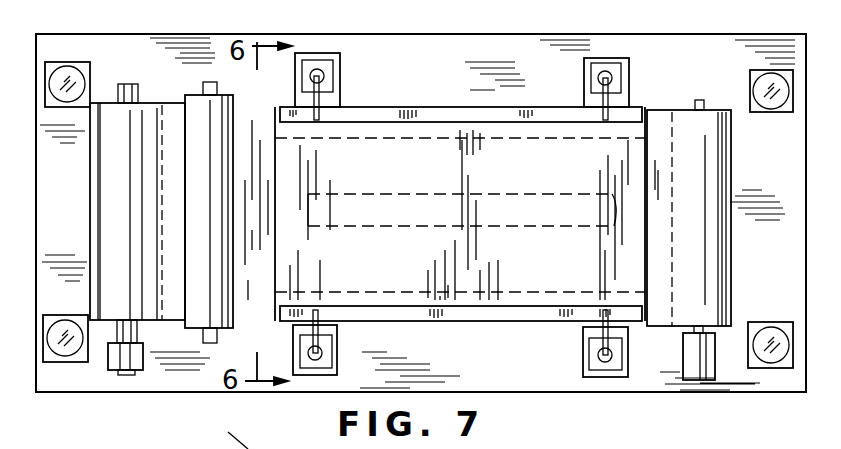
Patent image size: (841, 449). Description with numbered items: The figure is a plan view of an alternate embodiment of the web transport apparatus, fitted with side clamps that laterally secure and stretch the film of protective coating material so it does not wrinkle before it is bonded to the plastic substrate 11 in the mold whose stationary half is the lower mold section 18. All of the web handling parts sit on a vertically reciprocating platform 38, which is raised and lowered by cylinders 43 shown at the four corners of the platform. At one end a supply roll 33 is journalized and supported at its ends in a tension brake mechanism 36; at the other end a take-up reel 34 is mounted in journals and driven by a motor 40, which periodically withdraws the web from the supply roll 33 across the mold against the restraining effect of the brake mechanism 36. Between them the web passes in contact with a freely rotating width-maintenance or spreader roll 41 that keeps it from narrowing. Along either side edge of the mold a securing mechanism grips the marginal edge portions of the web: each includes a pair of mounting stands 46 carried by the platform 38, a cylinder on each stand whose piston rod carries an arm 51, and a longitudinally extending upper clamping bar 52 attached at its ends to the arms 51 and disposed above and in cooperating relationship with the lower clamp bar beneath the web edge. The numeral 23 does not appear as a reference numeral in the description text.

The plastic substrate 11 is at (492, 196).
The lower mold section 18 is at (452, 305).
The base 23 is at (225, 431).
The supply roll 33 is at (64, 195).
The take-up reel 34 is at (722, 116).
The tension brake mechanism 36 is at (113, 363).
The platform 38 is at (173, 380).
The motor 40 is at (705, 381).
The spreader roll 41 is at (195, 106).
The cylinders 43 is at (70, 78).
The mounting stands 46 is at (317, 57).
The arm 51 is at (323, 98).
The upper clamping bar 52 is at (487, 110).